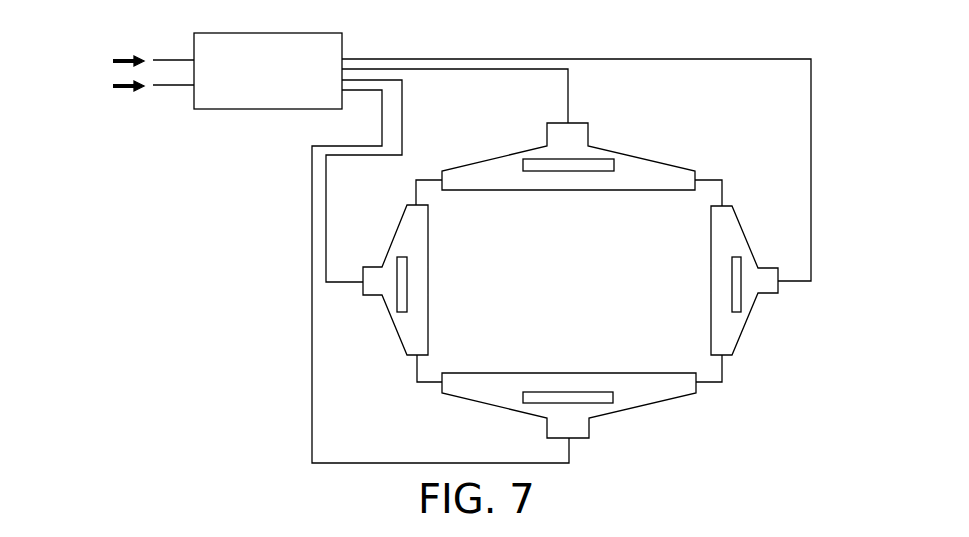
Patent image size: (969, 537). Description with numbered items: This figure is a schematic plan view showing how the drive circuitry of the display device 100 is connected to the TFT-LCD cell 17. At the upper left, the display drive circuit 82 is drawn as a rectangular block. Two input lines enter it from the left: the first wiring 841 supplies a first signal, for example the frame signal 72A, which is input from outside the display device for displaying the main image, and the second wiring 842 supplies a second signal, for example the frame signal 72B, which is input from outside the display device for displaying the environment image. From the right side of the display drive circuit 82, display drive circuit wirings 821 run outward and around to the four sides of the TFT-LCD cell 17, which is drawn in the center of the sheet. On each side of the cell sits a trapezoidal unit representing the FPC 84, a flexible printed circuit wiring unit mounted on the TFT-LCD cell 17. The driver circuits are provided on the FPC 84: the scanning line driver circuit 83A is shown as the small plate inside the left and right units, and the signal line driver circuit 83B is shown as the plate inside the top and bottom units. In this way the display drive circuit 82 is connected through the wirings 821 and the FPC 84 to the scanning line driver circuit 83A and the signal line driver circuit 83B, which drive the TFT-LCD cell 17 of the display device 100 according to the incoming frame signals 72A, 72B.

The display device 100 is at (212, 433).
The display drive circuit 82 is at (220, 95).
The display drive circuit wiring 821 is at (310, 316).
The first wiring 841 is at (164, 57).
The second wiring 842 is at (166, 88).
The frame signal 72A is at (93, 62).
The frame signal 72B is at (93, 87).
The TFT-LCD cell 17 is at (712, 187).
The FPC 84 is at (735, 345).
The scanning line driver circuit 83A is at (400, 302).
The signal line driver circuit 83B is at (600, 161).